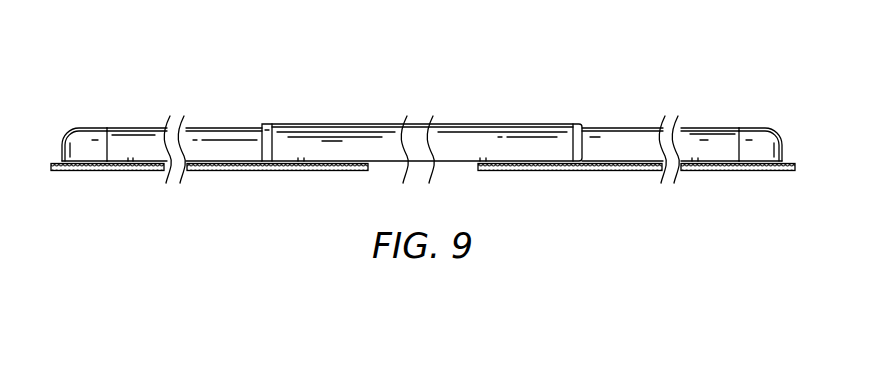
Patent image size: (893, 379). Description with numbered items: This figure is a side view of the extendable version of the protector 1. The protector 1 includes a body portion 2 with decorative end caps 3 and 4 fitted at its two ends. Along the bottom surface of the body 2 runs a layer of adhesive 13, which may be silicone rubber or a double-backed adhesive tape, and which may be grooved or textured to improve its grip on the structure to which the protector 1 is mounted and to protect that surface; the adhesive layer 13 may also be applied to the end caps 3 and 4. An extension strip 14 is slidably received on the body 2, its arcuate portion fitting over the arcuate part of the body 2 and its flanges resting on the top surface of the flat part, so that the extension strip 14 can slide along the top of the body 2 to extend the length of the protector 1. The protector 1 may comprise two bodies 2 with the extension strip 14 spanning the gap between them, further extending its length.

The protector 1 is at (145, 232).
The body portion 2 is at (220, 135).
The end cap 3 is at (88, 133).
The end cap 4 is at (758, 137).
The layer of adhesive 13 is at (240, 171).
The extension strip 14 is at (473, 135).